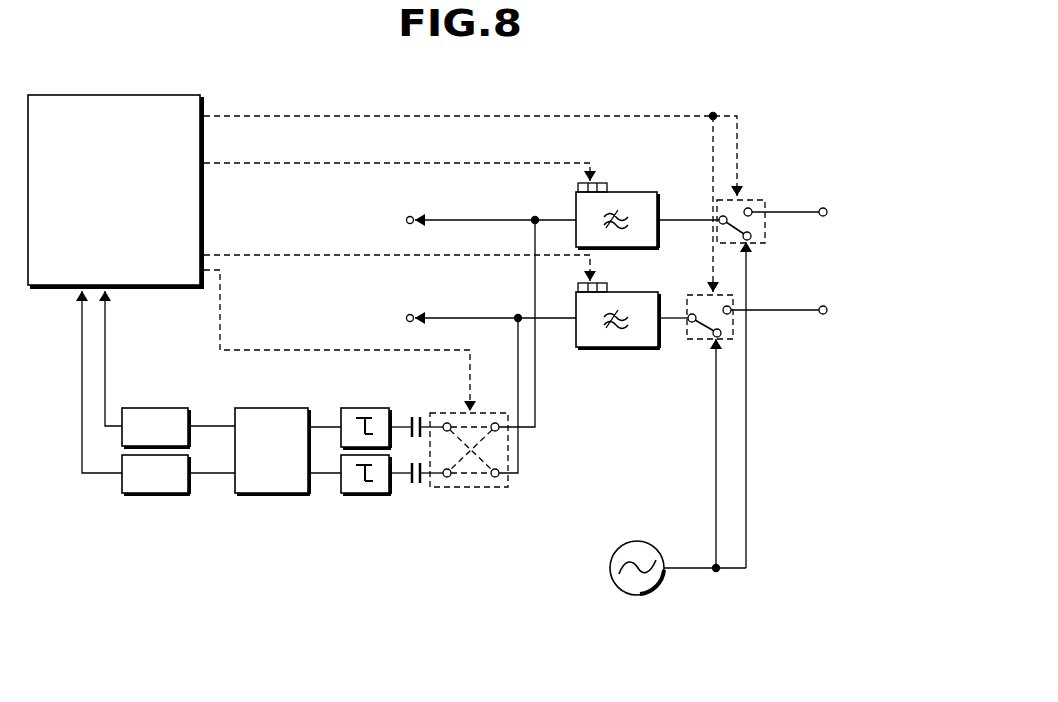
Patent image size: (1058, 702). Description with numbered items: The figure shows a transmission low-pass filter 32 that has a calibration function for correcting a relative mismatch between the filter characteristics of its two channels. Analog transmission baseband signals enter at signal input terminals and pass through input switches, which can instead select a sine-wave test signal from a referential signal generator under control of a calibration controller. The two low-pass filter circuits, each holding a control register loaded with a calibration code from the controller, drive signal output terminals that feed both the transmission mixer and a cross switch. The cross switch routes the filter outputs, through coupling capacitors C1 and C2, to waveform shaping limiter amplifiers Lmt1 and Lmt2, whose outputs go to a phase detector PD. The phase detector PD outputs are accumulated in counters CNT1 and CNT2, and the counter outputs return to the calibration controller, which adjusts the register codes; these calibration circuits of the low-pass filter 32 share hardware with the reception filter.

The transmission low-pass filter 32 is at (213, 87).
The counter CNT1 is at (156, 428).
The counter CNT2 is at (156, 475).
The phase detector PD is at (272, 451).
The limiter amplifier Lmt1 is at (349, 409).
The limiter amplifier Lmt2 is at (362, 494).
The coupling capacitor C1 is at (415, 417).
The coupling capacitor C2 is at (414, 483).